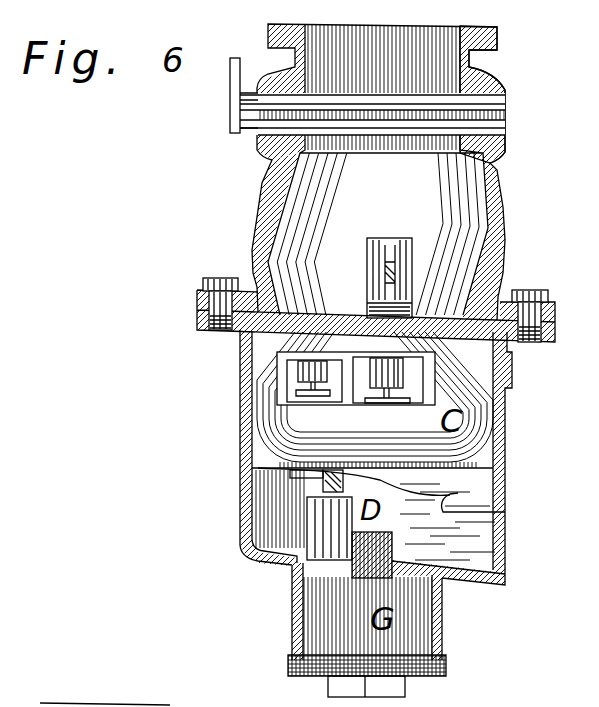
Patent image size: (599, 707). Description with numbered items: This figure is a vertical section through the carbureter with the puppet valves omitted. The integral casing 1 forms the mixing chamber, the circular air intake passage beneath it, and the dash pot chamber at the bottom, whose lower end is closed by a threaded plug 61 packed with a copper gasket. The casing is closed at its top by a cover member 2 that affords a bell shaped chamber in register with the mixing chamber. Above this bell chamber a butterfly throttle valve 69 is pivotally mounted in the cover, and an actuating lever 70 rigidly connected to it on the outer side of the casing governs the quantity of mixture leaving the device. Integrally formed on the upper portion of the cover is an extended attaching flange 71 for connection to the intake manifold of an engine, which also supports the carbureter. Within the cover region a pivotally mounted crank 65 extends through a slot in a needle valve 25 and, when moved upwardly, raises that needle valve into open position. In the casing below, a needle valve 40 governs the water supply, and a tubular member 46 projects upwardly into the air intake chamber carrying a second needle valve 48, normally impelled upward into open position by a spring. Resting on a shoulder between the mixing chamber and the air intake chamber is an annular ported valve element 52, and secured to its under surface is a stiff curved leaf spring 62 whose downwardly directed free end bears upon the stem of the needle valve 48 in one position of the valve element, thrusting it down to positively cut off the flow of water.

The casing 1 is at (237, 443).
The cover member 2 is at (497, 227).
The needle valve 25 is at (385, 397).
The needle valve 40 is at (307, 373).
The tubular member 46 is at (327, 517).
The needle valve 48 is at (337, 480).
The annular ported valve element 52 is at (487, 350).
The threaded plug 61 is at (405, 695).
The leaf spring 62 is at (505, 512).
The crank 65 is at (388, 263).
The butterfly throttle valve 69 is at (375, 113).
The actuating lever 70 is at (233, 95).
The attaching flange 71 is at (498, 50).